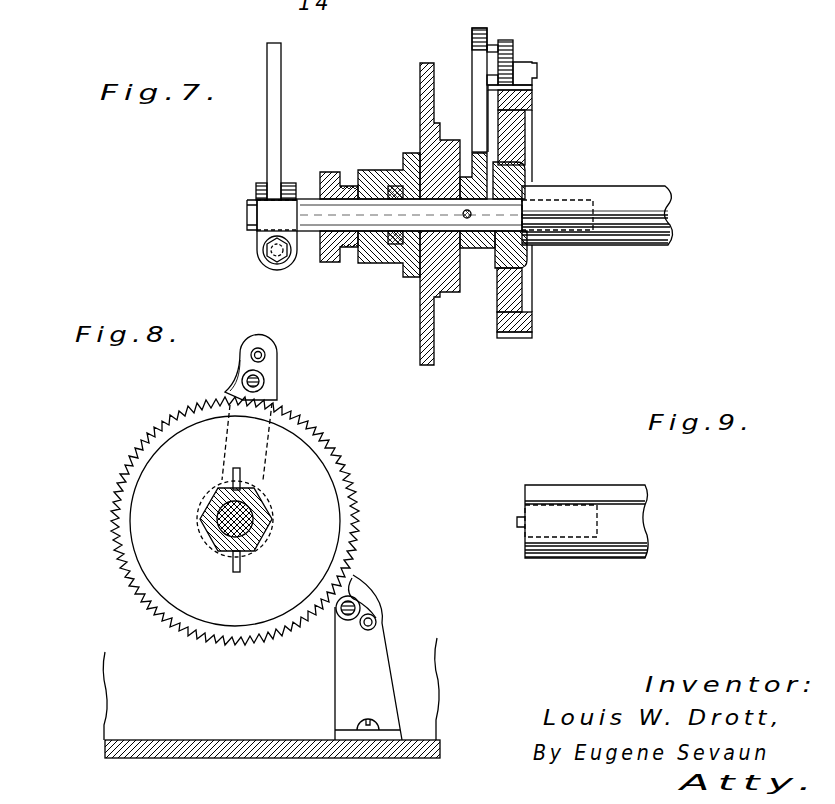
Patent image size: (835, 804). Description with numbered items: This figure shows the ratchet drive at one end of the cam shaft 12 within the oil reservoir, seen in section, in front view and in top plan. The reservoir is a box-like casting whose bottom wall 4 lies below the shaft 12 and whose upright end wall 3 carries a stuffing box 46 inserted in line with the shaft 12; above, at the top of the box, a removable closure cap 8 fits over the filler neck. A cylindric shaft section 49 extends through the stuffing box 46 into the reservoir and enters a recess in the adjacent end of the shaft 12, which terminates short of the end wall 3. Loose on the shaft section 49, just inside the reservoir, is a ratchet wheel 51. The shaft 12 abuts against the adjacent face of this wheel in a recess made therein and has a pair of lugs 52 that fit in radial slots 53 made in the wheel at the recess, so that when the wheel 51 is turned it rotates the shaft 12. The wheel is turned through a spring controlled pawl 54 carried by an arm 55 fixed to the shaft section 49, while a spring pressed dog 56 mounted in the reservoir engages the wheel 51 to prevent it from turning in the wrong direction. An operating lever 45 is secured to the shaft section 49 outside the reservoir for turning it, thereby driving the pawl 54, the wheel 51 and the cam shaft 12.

In FIG. 7, the end wall 3 is at (424, 90).
In FIG. 8, the bottom wall 4 is at (222, 748).
In FIG. 7, the removable closure cap 8 is at (573, 360).
In FIG. 7, the shaft 12 is at (648, 192).
In FIG. 8, the shaft 12 is at (272, 516).
In FIG. 9, the shaft 12 is at (608, 494).
In FIG. 7, the operating lever 45 is at (268, 146).
In FIG. 7, the stuffing box 46 is at (375, 158).
In FIG. 7, the cylindric shaft section 49 is at (312, 200).
In FIG. 8, the cylindric shaft section 49 is at (202, 516).
In FIG. 7, the ratchet wheel 51 is at (530, 128).
In FIG. 8, the ratchet wheel 51 is at (358, 498).
In FIG. 7, the lug 52 is at (525, 194).
In FIG. 9, the lug 52 is at (517, 522).
In FIG. 7, the radial slot 53 is at (527, 172).
In FIG. 8, the radial slot 53 is at (233, 470).
In FIG. 7, the spring controlled pawl 54 is at (520, 70).
In FIG. 8, the spring controlled pawl 54 is at (228, 393).
In FIG. 7, the arm 55 is at (474, 50).
In FIG. 8, the arm 55 is at (278, 366).
In FIG. 8, the spring pressed dog 56 is at (356, 578).